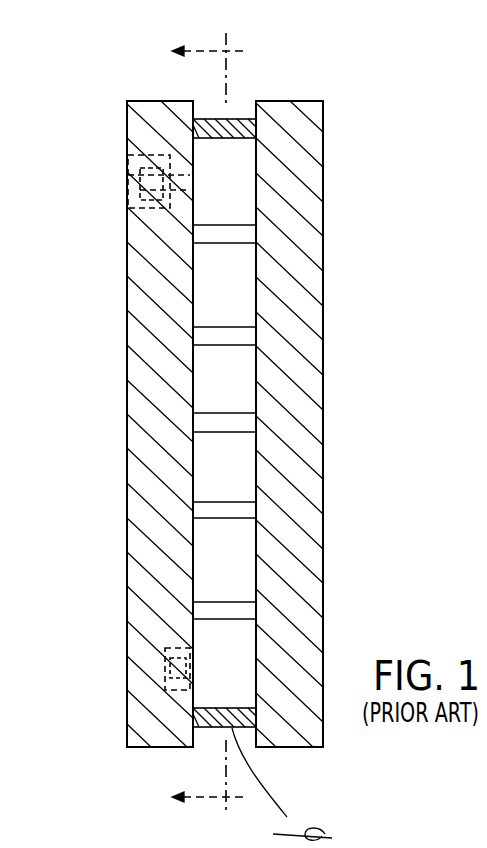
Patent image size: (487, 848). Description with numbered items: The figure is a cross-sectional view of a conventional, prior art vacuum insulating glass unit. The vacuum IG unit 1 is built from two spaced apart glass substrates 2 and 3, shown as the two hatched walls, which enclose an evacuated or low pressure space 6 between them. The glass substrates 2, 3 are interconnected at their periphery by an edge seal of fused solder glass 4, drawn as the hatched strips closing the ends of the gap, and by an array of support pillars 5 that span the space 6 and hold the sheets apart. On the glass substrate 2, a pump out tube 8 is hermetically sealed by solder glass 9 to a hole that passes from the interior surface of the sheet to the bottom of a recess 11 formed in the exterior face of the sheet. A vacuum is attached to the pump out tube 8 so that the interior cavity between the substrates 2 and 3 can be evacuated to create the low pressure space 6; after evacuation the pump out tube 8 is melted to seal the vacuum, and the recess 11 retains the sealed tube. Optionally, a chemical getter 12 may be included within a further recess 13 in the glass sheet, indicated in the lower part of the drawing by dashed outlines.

The vacuum IG unit 1 is at (243, 436).
The glass substrate 2 is at (127, 473).
The glass substrate 3 is at (305, 356).
The edge seal of fused solder glass 4 is at (238, 120).
The support pillars 5 is at (233, 617).
The low pressure space 6 is at (210, 547).
The pump out tube 8 is at (137, 185).
The solder glass 9 is at (160, 168).
The recess 11 is at (142, 218).
The chemical getter 12 is at (165, 650).
The recess 13 is at (170, 697).